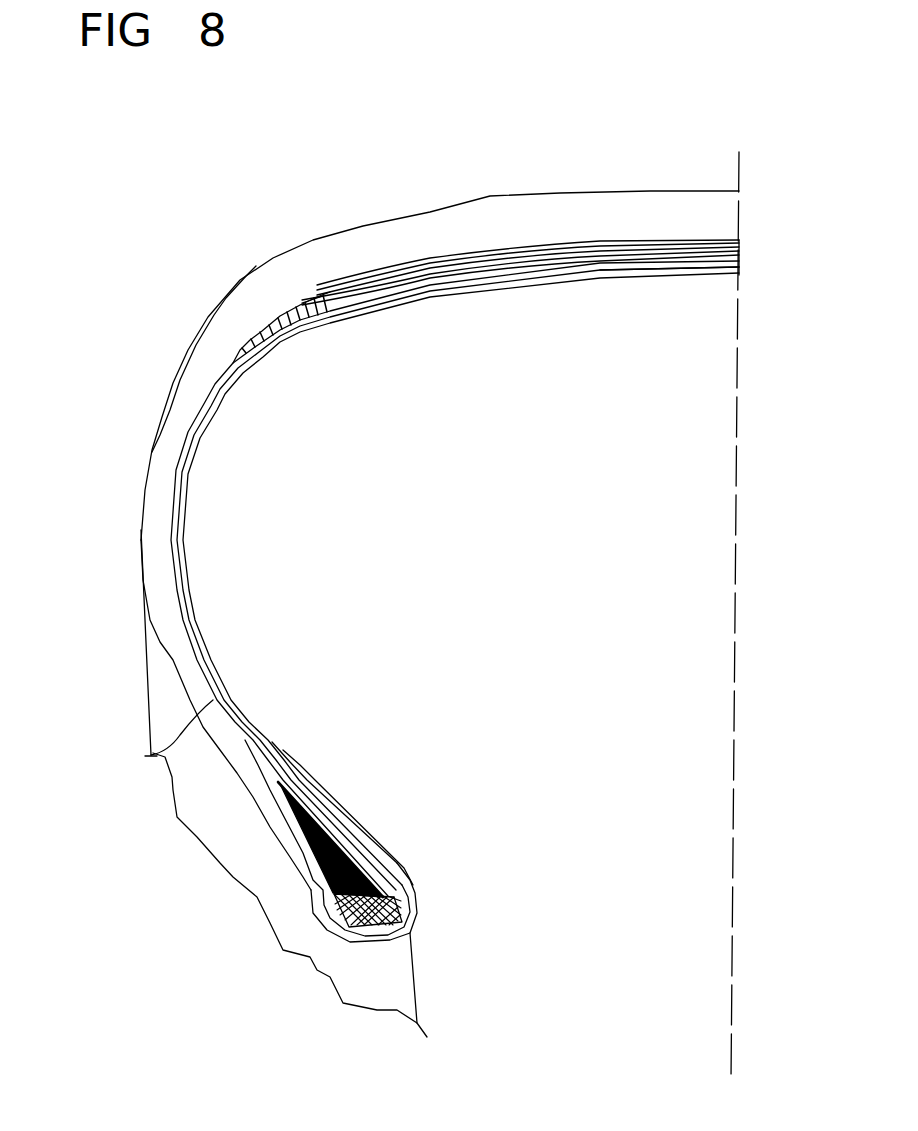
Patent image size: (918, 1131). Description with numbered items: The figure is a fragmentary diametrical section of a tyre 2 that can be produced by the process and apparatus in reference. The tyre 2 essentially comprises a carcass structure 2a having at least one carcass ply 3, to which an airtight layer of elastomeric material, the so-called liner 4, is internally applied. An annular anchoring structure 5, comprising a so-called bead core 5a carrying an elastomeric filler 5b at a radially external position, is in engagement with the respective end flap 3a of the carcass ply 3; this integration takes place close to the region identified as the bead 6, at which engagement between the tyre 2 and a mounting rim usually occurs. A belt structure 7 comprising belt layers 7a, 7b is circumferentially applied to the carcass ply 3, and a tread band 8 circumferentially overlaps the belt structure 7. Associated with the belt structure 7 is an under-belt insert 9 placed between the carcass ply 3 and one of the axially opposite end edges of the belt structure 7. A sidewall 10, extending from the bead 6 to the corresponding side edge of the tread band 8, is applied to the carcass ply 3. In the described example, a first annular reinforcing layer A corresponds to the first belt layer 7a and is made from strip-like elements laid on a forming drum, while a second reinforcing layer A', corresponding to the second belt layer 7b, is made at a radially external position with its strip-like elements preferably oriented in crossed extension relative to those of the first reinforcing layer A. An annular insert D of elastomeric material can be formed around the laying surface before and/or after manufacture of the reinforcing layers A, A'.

The tyre 2 is at (86, 642).
The carcass structure 2a is at (305, 768).
The carcass ply 3 is at (151, 757).
The end flaps 3a is at (318, 908).
The liner 4 is at (328, 312).
The annular anchoring structure 5 is at (356, 816).
The bead core 5a is at (413, 896).
The elastomeric filler 5b is at (297, 830).
The bead 6 is at (412, 852).
The belt structure 7 is at (697, 226).
The first belt layer 7a is at (556, 258).
The second belt layer 7b is at (530, 250).
The tread band 8 is at (612, 210).
The under-belt insert 9 is at (303, 307).
The sidewall 10 is at (153, 473).
The first annular reinforcing layer A is at (696, 338).
The second reinforcing layer A' is at (779, 210).
The annular insert D is at (273, 347).